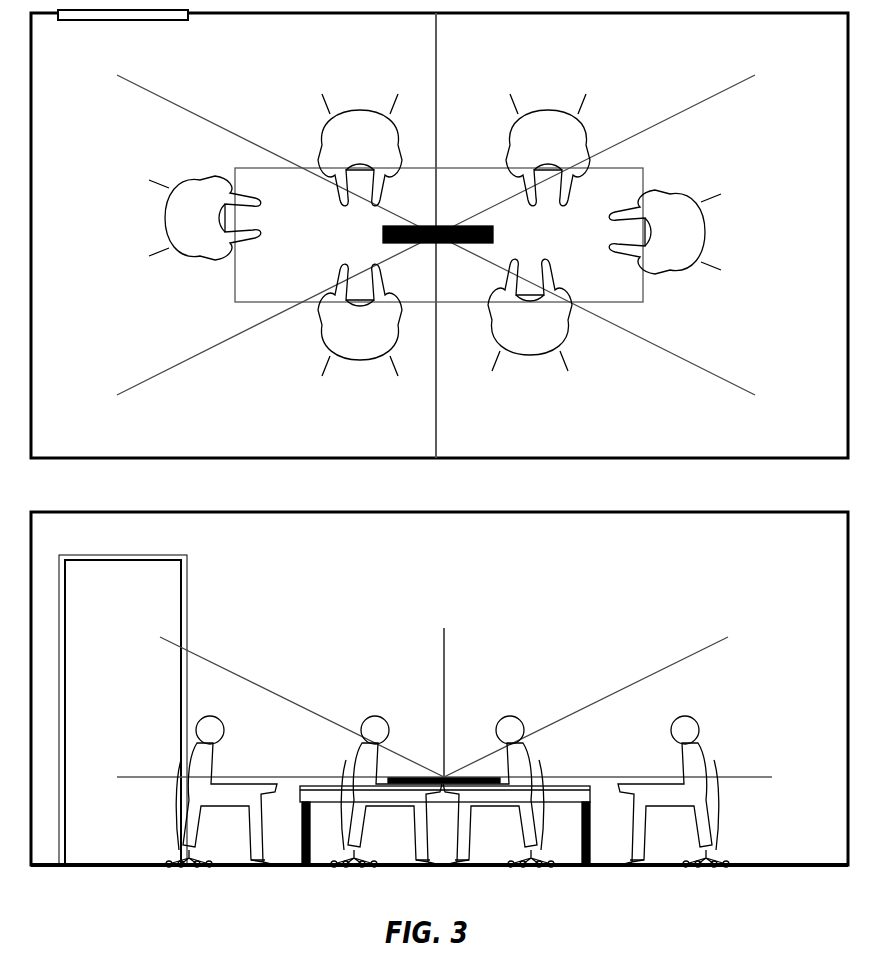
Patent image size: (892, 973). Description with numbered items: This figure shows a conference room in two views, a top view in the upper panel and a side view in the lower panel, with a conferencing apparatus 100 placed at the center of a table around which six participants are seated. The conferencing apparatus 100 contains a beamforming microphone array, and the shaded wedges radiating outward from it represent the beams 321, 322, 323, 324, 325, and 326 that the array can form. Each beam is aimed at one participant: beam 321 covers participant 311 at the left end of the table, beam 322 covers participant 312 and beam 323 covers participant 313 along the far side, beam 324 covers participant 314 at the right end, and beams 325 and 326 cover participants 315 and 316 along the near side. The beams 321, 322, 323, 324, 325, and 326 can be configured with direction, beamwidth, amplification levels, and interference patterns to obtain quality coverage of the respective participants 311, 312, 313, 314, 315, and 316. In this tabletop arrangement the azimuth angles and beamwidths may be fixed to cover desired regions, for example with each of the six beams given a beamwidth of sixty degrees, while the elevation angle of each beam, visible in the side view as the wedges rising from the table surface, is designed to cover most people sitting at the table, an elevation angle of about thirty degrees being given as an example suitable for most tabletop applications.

The conferencing apparatus 100 is at (495, 234).
The participant 311 is at (211, 252).
The participant 312 is at (354, 120).
The participant 313 is at (548, 118).
The participant 314 is at (671, 262).
The participant 315 is at (557, 340).
The participant 316 is at (336, 355).
The beam 321 is at (213, 166).
The beam 322 is at (412, 124).
The beam 323 is at (474, 126).
The beam 324 is at (668, 168).
The beam 325 is at (463, 354).
The beam 326 is at (416, 356).